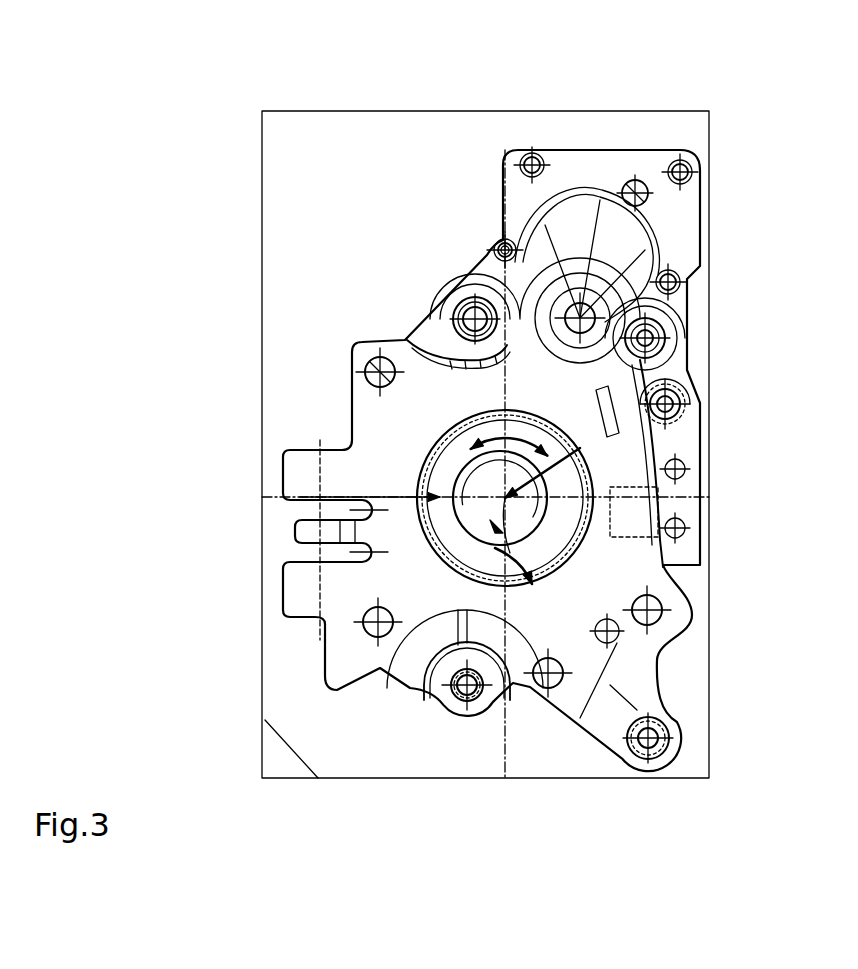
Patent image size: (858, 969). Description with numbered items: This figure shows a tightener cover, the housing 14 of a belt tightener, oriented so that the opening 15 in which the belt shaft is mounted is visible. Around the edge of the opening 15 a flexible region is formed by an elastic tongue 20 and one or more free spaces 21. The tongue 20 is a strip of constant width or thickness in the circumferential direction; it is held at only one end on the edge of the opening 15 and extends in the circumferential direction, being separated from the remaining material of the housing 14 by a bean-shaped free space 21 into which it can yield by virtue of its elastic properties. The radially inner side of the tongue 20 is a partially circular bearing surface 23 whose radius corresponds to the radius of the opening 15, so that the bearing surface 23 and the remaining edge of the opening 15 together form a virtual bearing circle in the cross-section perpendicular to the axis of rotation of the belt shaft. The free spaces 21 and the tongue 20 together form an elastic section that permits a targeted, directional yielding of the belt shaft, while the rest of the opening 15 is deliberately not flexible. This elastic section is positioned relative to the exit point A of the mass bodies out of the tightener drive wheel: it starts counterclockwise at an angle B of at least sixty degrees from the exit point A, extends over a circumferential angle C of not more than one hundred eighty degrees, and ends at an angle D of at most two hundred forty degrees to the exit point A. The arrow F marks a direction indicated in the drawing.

The housing 14 is at (688, 622).
The opening 15 is at (535, 542).
The tongue 20 is at (447, 537).
The free space 21 is at (510, 557).
The bearing surface 23 is at (525, 588).
The exit point A is at (574, 402).
The angle B is at (501, 240).
The circumferential angle C is at (465, 477).
The angle D is at (448, 533).
The rotation direction F is at (550, 457).